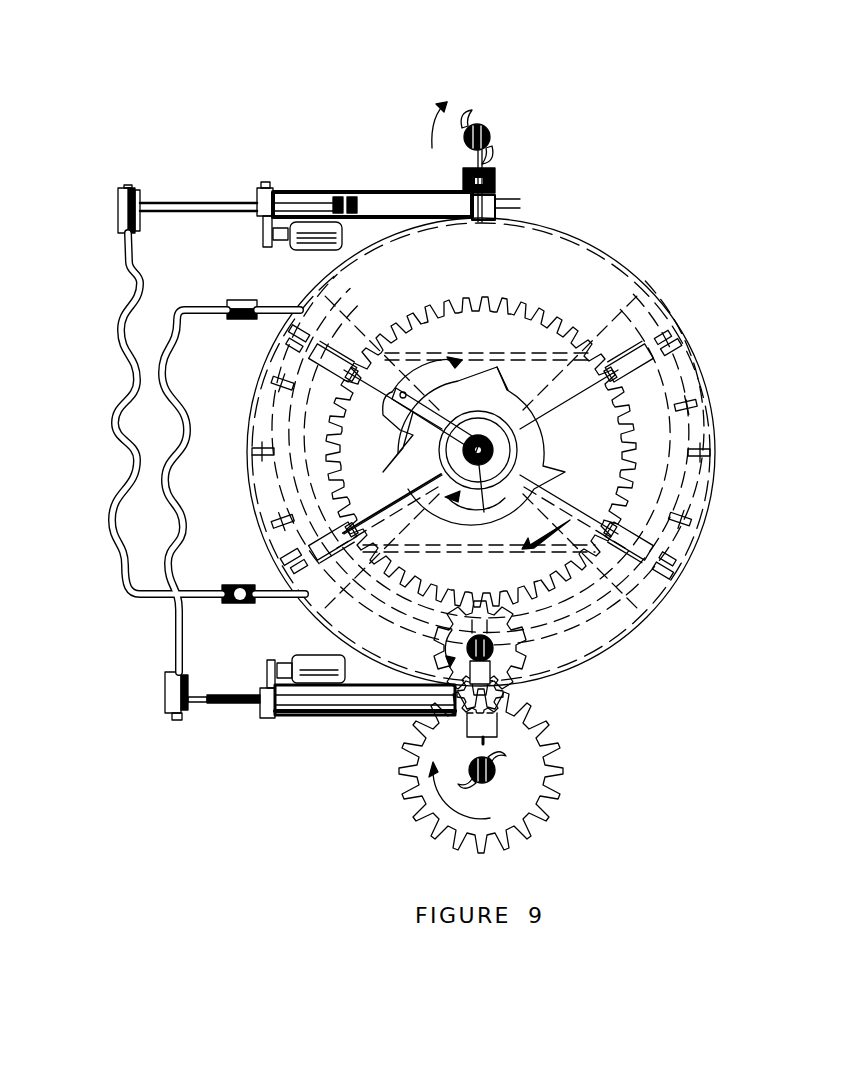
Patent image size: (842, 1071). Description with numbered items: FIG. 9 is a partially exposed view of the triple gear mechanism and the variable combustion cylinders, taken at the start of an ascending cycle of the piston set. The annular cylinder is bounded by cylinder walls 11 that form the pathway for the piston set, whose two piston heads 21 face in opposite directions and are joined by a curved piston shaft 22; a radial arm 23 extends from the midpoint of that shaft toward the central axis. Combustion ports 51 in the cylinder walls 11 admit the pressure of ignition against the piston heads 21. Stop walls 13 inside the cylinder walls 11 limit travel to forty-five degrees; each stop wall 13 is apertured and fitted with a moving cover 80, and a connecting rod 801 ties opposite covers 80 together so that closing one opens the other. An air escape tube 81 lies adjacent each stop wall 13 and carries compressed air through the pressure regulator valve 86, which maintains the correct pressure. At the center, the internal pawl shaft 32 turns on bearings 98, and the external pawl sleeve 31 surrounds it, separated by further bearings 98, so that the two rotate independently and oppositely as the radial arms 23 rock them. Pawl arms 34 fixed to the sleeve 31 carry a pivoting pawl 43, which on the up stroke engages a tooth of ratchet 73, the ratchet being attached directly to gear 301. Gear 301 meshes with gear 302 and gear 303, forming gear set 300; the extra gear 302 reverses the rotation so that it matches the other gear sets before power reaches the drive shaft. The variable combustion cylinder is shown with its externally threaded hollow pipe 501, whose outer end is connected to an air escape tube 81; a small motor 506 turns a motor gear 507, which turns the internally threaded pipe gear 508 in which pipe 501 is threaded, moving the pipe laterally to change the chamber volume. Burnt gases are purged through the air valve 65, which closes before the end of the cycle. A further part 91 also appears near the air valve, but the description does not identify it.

The cylinder walls 11 is at (588, 247).
The connecting rod 801 is at (692, 483).
The curved piston shaft 22 is at (665, 408).
The stop walls 13 is at (350, 528).
The moving cover 80 is at (660, 332).
The gear set 300 is at (441, 305).
The circular gear 301 is at (500, 344).
The internal pawl shaft 32 is at (490, 440).
The external pawl sleeve 31 is at (486, 470).
The ratchet 73 is at (503, 410).
The bearings 98 is at (490, 410).
The radial arm 23 is at (545, 486).
The pawl arms 34 is at (418, 400).
The pivoting pawl 43 is at (384, 435).
The piston heads 21 is at (460, 624).
The circular gear 302 is at (523, 676).
The air valve 65 is at (496, 176).
The combustion ports 51 is at (490, 224).
The drive wheel 91 is at (484, 125).
The externally threaded hollow pipe 501 is at (150, 201).
The pressure regulator valve 86 is at (140, 222).
The pipe gear 508 is at (266, 186).
The motor gear 507 is at (266, 245).
The small motor 506 is at (310, 657).
The circular gear 303 is at (558, 783).
The air escape tube 81 is at (170, 368).